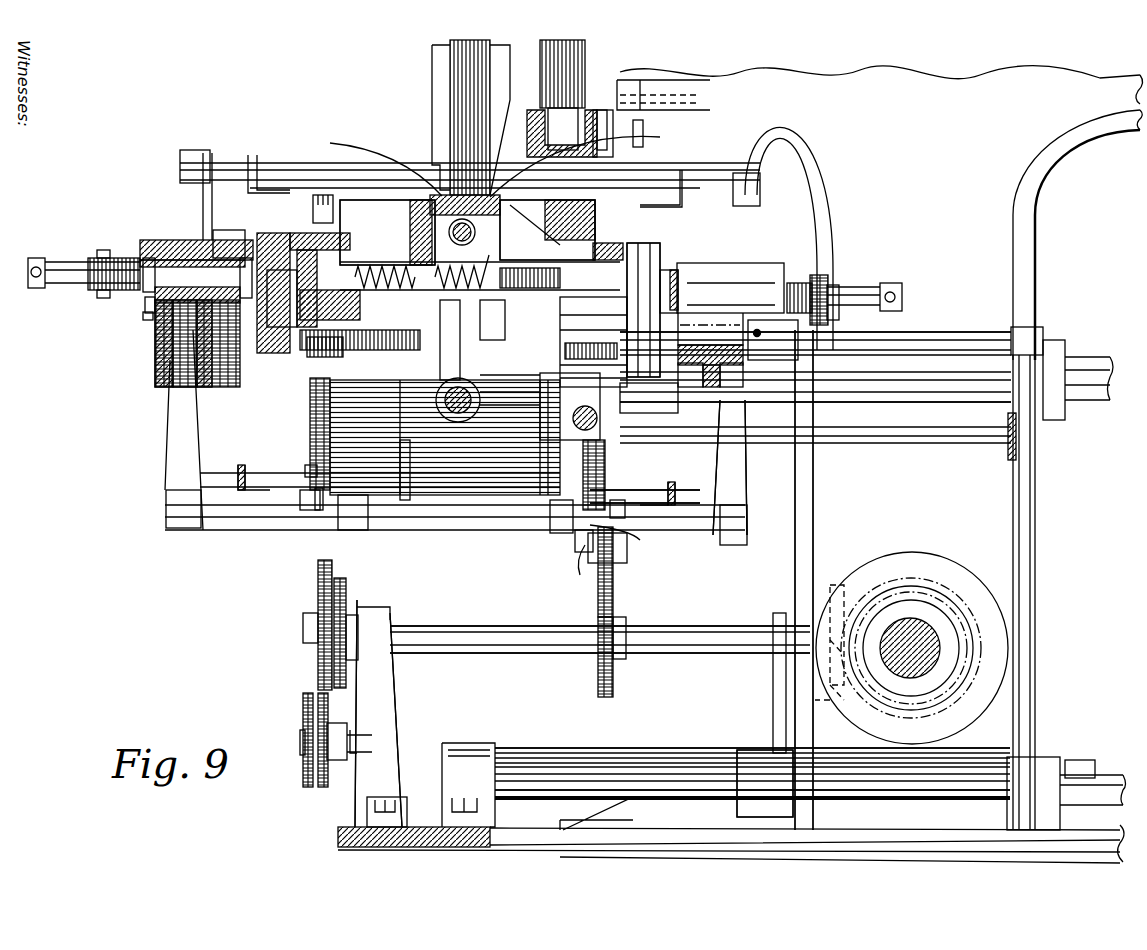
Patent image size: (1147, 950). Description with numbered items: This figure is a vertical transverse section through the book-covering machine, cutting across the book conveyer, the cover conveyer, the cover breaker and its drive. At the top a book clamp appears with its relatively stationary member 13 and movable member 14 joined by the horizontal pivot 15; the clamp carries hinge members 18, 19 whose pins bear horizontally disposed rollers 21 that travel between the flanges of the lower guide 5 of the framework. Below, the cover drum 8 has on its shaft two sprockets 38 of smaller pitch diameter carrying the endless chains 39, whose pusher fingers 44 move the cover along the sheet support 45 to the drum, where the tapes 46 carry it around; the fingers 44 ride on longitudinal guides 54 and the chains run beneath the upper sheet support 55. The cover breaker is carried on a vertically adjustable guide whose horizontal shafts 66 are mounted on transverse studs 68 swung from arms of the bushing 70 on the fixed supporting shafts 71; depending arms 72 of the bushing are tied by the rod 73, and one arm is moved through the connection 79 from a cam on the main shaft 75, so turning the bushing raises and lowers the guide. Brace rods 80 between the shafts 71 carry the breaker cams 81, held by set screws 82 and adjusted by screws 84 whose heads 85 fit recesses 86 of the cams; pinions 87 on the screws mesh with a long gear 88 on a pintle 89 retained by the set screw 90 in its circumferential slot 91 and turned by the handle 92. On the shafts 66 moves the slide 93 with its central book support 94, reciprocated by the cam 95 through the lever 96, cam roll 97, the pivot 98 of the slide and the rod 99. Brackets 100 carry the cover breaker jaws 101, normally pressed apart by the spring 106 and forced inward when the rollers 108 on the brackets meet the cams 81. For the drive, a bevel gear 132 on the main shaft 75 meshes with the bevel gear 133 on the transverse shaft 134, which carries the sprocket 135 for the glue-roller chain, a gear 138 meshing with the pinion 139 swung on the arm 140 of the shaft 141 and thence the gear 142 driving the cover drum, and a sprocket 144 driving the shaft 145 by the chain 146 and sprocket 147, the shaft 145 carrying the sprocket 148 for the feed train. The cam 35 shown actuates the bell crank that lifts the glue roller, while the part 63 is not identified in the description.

The lower guide 5 is at (598, 112).
The cover drum 8 is at (445, 437).
The stationary member 13 is at (492, 80).
The movable member 14 is at (440, 125).
The horizontal pivot 15 is at (700, 284).
The hinge member 18 is at (556, 90).
The hinge member 19 is at (557, 56).
The horizontally disposed rollers 21 is at (565, 122).
The cam 35 is at (346, 592).
The sprockets 38 is at (606, 460).
The endless chains 39 is at (305, 470).
The pusher fingers 44 is at (562, 508).
The sheet support 45 is at (672, 484).
The tapes 46 is at (580, 540).
The longitudinal guides 54 is at (620, 512).
The upper sheet support 55 is at (684, 178).
The rod 63 is at (405, 500).
The horizontal shafts 66 is at (455, 422).
The transverse studs 68 is at (360, 341).
The bushing 70 is at (322, 358).
The supporting shafts 71 is at (859, 367).
The depending arms 72 is at (548, 396).
The rod 73 is at (649, 400).
The main shaft 75 is at (910, 645).
The connection 79 is at (617, 437).
The brace rods 80 is at (735, 430).
The breaker cams 81 is at (642, 330).
The set screws 82 is at (712, 265).
The adjusting screws 84 is at (800, 288).
The head 85 is at (676, 272).
The recess 86 is at (670, 280).
The pinions 87 is at (826, 284).
The central long gear 88 is at (100, 291).
The pintle 89 is at (190, 296).
The set screw 90 is at (760, 336).
The circumferential slot 91 is at (150, 297).
The handle 92 is at (895, 297).
The slide 93 is at (458, 378).
The central book support 94 is at (466, 195).
The cam 95 is at (790, 712).
The lever 96 is at (806, 480).
The cam roll 97 is at (780, 640).
The pivot 98 is at (522, 270).
The rod 99 is at (505, 305).
The brackets 100 is at (560, 268).
The cover breaker jaws 101 is at (498, 195).
The spring 106 is at (340, 300).
The rollers 108 is at (262, 365).
The bevel gear 132 is at (884, 560).
The bevel gear 133 is at (840, 588).
The transverse shaft 134 is at (690, 634).
The sprocket 135 is at (346, 667).
The gear 138 is at (598, 657).
The pinion 139 is at (615, 580).
The arm 140 is at (590, 548).
The shaft 141 is at (700, 495).
The gear 142 is at (622, 520).
The sprocket 144 is at (320, 582).
The shaft 145 is at (1080, 760).
The chain 146 is at (330, 700).
The sprocket 147 is at (348, 720).
The sprocket 148 is at (302, 716).